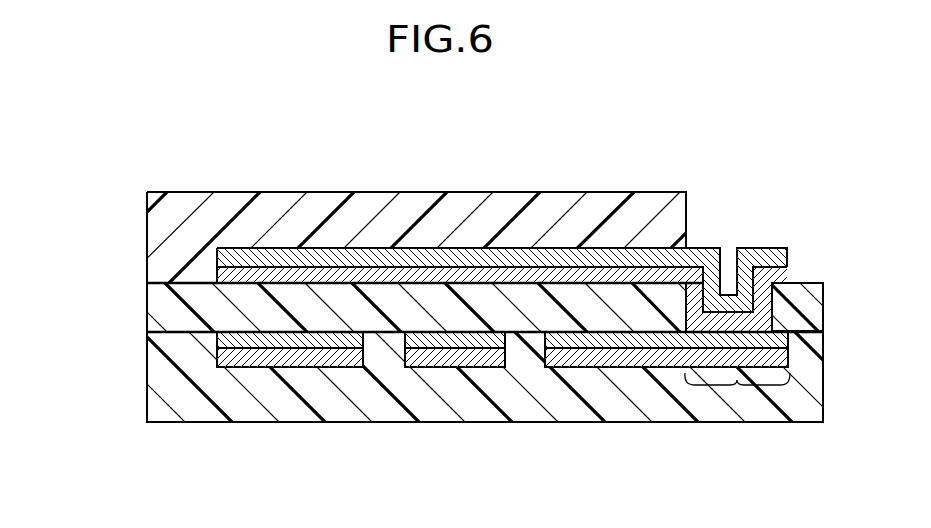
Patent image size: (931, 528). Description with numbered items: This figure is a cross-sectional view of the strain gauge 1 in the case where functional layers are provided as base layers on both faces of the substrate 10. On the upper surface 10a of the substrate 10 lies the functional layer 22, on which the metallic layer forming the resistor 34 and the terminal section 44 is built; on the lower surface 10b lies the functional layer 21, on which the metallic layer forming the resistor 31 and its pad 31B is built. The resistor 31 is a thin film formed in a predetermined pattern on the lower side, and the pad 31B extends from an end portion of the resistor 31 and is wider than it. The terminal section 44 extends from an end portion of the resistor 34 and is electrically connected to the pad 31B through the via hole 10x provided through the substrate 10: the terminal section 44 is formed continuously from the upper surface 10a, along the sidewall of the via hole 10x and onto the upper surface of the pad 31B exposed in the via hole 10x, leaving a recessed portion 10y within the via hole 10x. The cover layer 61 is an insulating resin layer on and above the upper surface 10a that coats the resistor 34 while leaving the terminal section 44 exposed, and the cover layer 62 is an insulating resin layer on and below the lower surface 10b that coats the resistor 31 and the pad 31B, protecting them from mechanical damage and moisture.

The strain gauge 1 is at (117, 145).
The cover layer 61 is at (237, 205).
The resistor 34 is at (377, 255).
The via hole 10x is at (695, 302).
The recessed portion 10y is at (728, 286).
The terminal section 44 is at (770, 247).
The functional layer 22 is at (217, 277).
The upper surface 10a is at (175, 284).
The substrate 10 is at (170, 303).
The lower surface 10b is at (175, 332).
The functional layer 21 is at (217, 340).
The cover layer 62 is at (317, 412).
The resistor 31 is at (603, 365).
The pad 31B is at (737, 387).